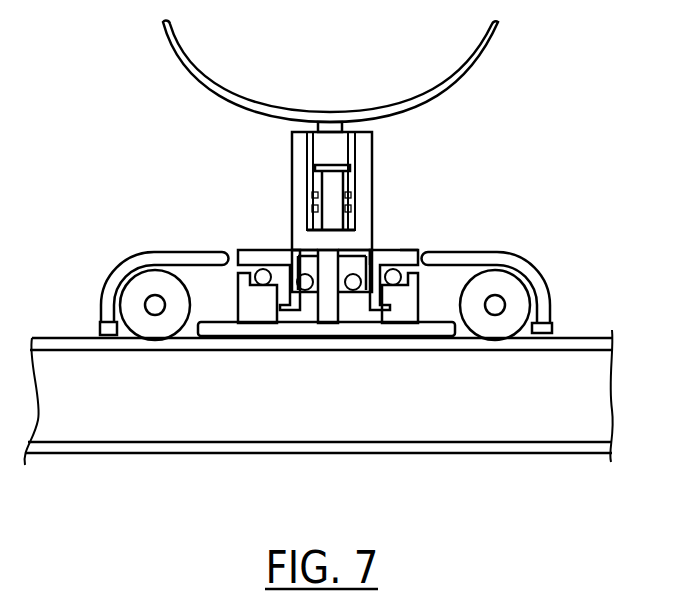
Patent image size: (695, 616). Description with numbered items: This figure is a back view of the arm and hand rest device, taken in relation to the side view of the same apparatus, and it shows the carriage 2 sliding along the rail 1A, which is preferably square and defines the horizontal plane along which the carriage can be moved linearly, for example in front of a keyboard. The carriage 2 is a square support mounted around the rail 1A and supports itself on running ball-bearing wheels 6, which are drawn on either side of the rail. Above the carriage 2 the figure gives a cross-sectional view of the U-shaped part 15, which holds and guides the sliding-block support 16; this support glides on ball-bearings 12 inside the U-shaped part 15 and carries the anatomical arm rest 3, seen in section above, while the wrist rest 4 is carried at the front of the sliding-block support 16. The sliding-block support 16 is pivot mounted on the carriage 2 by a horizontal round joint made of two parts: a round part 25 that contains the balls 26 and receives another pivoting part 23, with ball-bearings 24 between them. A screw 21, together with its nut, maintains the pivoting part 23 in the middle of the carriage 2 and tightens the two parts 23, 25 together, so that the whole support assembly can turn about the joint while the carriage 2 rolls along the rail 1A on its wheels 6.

The rail 1A is at (195, 452).
The carriage 2 is at (447, 318).
The anatomical arm rest 3 is at (484, 71).
The wrist rest 4 is at (330, 278).
The ball-bearing wheels 6 is at (137, 287).
The ball-bearings 12 is at (367, 163).
The U-shaped part 15 is at (300, 162).
The sliding-block support 16 is at (333, 142).
The screw 21 is at (363, 256).
The pivoting part 23 is at (405, 257).
The ball-bearings 24 is at (260, 276).
The round part 25 is at (245, 298).
The balls 26 is at (303, 283).